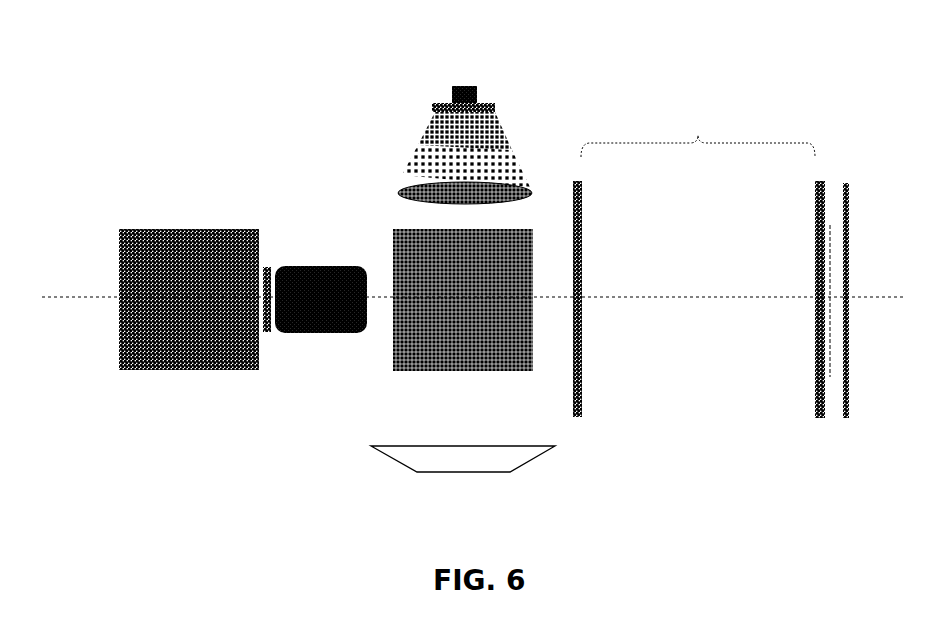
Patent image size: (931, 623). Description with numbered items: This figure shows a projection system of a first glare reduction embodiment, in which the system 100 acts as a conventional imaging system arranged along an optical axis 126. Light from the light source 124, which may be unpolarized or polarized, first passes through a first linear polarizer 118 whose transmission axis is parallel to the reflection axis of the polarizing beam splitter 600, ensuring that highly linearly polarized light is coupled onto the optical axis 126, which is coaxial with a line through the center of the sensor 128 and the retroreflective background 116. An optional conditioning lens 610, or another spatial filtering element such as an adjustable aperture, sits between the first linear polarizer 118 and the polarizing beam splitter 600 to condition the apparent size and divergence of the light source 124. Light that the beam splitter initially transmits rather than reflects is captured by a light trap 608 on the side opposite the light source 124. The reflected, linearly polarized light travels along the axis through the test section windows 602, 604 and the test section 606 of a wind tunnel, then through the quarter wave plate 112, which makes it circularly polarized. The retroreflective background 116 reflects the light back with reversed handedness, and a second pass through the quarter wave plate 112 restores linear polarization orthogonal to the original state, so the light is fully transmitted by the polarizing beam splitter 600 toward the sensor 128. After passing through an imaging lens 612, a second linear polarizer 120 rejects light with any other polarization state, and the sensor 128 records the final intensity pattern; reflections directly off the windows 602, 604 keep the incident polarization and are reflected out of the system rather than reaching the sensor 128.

The system 100 is at (305, 75).
The quarter wave plate 112 is at (830, 370).
The retroreflective background 116 is at (847, 187).
The first linear polarizer 118 is at (492, 108).
The second linear polarizer 120 is at (267, 333).
The light source 124 is at (467, 85).
The optical axis 126 is at (58, 295).
The sensor 128 is at (130, 371).
The polarizing beam splitter 600 is at (403, 368).
The window 602 is at (575, 418).
The window 604 is at (817, 416).
The test section 606 is at (698, 133).
The light trap 608 is at (395, 453).
The conditioning lens 610 is at (397, 192).
The imaging lens 612 is at (322, 334).